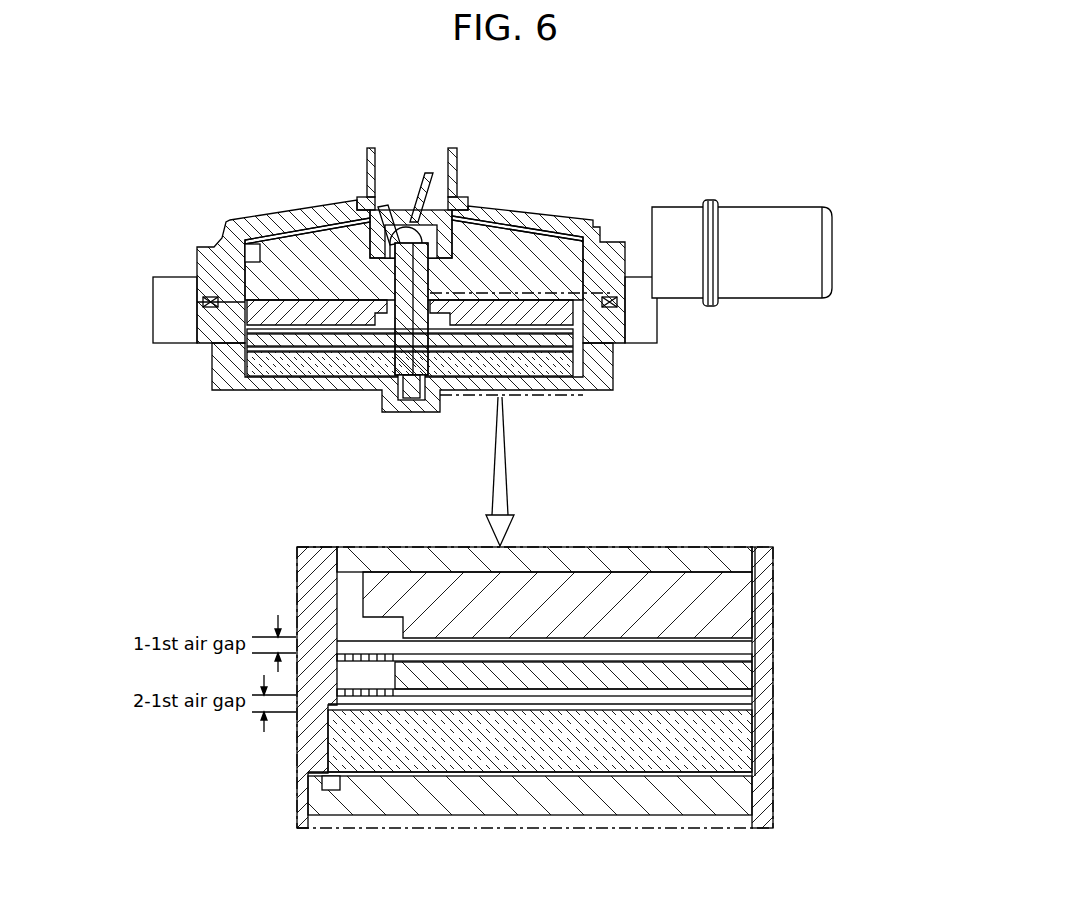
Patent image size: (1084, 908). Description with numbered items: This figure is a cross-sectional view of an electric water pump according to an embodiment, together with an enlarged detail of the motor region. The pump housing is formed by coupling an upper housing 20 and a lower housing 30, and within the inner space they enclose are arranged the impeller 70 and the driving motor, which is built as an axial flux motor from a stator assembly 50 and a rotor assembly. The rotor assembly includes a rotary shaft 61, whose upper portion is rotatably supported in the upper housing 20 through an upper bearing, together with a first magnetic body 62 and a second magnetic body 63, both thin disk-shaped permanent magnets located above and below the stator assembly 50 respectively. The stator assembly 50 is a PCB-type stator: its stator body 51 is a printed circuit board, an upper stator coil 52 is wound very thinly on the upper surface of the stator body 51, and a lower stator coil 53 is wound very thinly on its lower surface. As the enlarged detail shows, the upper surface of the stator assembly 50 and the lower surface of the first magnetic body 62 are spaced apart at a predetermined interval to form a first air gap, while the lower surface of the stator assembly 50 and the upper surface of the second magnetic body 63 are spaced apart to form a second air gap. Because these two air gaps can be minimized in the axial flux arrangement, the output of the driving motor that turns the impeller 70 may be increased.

The upper housing 20 is at (213, 256).
The lower housing 30 is at (230, 358).
The stator assembly 50 is at (600, 336).
The stator body 51 is at (766, 676).
The upper stator coil 52 is at (683, 658).
The lower stator coil 53 is at (683, 699).
The rotary shaft 61 is at (433, 287).
The first magnetic body 62 is at (530, 313).
The second magnetic body 63 is at (567, 360).
The impeller 70 is at (503, 253).